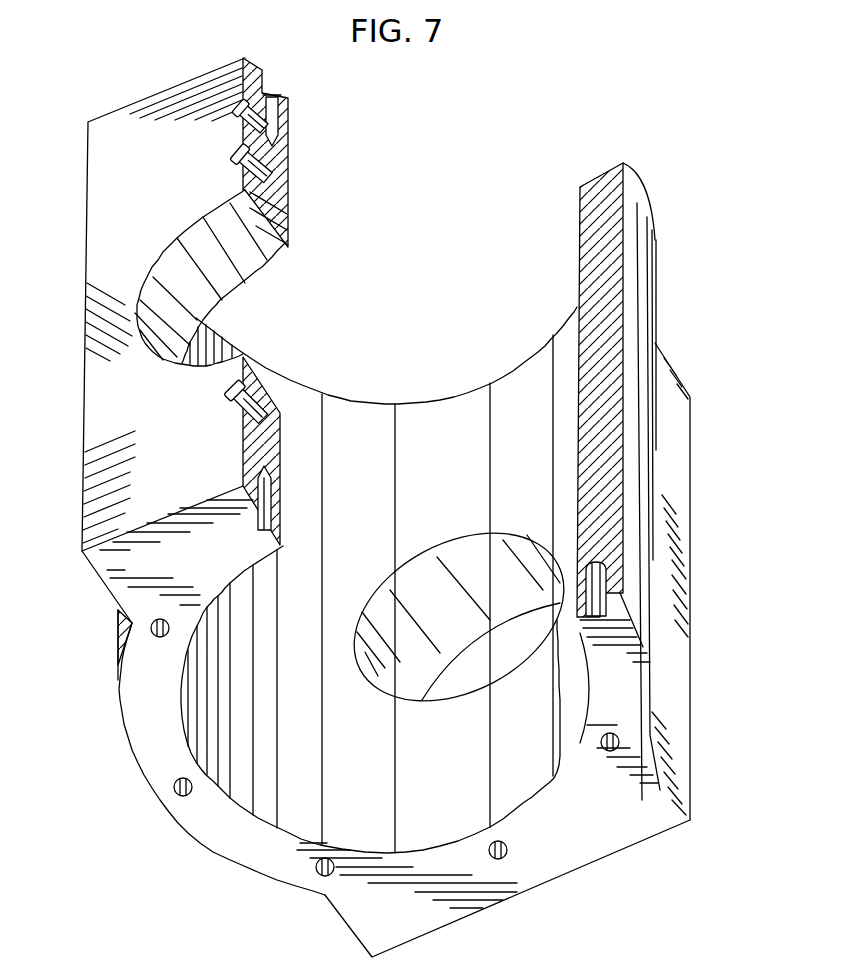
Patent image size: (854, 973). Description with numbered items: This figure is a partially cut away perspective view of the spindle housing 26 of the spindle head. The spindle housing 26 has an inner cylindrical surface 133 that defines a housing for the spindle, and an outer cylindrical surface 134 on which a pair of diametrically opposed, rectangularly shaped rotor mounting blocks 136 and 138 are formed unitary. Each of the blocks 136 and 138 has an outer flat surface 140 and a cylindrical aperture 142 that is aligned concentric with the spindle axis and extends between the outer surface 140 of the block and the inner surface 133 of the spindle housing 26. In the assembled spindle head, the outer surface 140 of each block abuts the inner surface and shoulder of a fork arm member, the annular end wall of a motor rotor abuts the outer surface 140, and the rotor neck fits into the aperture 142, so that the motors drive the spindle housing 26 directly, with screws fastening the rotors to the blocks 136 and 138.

The spindle housing 26 is at (654, 201).
The inner cylindrical surface 133 is at (450, 471).
The outer cylindrical surface 134 is at (647, 293).
The rotor mounting block 136 is at (672, 397).
The rotor mounting block 138 is at (117, 560).
The outer flat surface 140 is at (155, 188).
The cylindrical aperture 142 is at (231, 278).